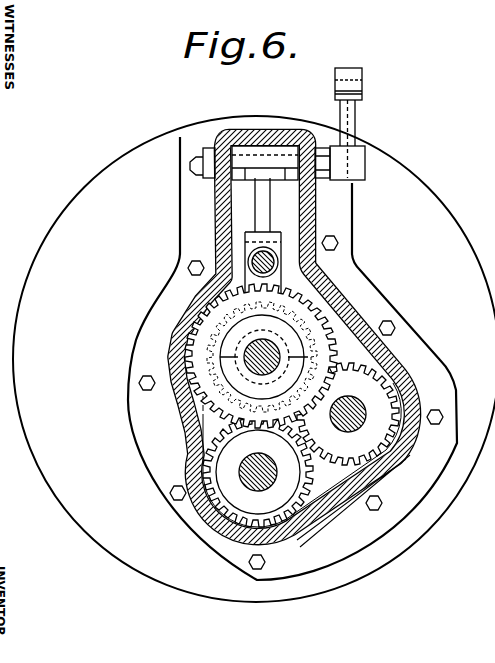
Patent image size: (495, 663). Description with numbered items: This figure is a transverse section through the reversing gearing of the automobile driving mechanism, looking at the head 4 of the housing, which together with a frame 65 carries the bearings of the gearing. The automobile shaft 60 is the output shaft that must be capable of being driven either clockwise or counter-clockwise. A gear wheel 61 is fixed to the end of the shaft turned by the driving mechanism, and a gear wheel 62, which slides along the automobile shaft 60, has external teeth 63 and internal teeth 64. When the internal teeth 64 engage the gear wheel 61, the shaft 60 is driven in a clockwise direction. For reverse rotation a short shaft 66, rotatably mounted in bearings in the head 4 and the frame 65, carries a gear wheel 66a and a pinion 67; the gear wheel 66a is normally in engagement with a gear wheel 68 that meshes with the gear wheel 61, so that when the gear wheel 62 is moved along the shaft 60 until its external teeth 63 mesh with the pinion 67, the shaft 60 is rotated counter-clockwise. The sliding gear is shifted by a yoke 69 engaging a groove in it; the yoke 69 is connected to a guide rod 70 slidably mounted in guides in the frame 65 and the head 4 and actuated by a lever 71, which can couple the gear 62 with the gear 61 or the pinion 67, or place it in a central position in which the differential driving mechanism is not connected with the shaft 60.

The head 4 is at (254, 359).
The automobile shaft 60 is at (264, 357).
The gear wheel 61 is at (215, 364).
The gear wheel 62 is at (203, 312).
The external teeth 63 is at (195, 318).
The internal teeth 64 is at (205, 350).
The frame 65 is at (316, 211).
The short shaft 66 is at (253, 490).
The gear wheel 66a is at (273, 497).
The pinion 67 is at (282, 494).
The gear wheel 68 is at (262, 337).
The yoke 69 is at (273, 297).
The guide rod 70 is at (278, 263).
The lever 71 is at (351, 116).